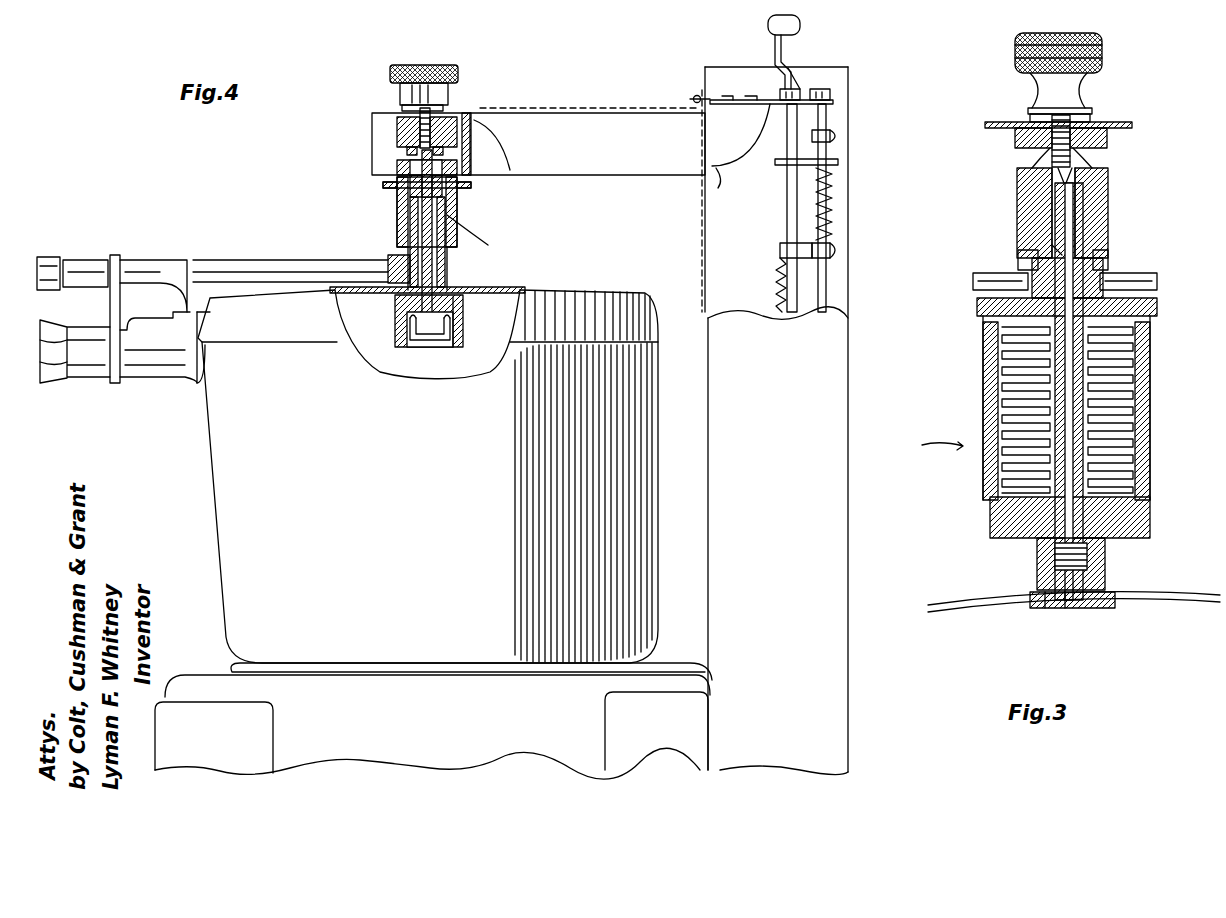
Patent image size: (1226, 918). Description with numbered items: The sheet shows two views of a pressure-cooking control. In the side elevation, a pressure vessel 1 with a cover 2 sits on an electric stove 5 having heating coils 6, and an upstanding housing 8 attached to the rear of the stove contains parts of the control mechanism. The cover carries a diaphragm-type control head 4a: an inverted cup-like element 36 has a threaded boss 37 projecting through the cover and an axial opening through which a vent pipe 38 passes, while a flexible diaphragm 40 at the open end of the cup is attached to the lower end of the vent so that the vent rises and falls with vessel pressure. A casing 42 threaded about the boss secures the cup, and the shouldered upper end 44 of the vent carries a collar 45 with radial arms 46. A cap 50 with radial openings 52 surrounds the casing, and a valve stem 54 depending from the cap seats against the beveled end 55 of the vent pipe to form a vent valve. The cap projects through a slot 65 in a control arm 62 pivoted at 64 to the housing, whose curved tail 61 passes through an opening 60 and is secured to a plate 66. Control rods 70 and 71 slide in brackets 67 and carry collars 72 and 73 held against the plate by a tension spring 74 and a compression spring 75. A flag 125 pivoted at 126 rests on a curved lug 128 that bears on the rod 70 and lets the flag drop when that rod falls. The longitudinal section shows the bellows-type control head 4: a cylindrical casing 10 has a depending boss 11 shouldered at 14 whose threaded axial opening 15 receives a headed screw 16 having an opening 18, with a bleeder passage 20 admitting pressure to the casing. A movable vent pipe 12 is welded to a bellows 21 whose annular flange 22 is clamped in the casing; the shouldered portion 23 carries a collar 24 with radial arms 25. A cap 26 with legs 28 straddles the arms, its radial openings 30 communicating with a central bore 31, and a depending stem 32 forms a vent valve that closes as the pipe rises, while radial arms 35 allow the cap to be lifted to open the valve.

In FIG. 4, the pressure vessel 1 is at (428, 476).
In FIG. 4, the cover 2 is at (515, 290).
In FIG. 3, the cover 2 is at (1182, 596).
In FIG. 3, the control head 4 is at (932, 441).
In FIG. 4, the control head 4a is at (458, 235).
In FIG. 4, the electric stove 5 is at (432, 727).
In FIG. 4, the heating coils 6 is at (640, 668).
In FIG. 4, the housing 8 is at (775, 421).
In FIG. 3, the cylindrical casing 10 is at (1150, 445).
In FIG. 3, the boss 11 is at (1105, 565).
In FIG. 3, the vent pipe 12 is at (1085, 420).
In FIG. 3, the shoulder 14 is at (1100, 608).
In FIG. 3, the axial opening 15 is at (1055, 560).
In FIG. 3, the headed screw 16 is at (1045, 608).
In FIG. 3, the opening 18 is at (1065, 608).
In FIG. 3, the bleeder passage 20 is at (1145, 505).
In FIG. 3, the bellows 21 is at (1135, 365).
In FIG. 3, the annular flange 22 is at (1157, 302).
In FIG. 3, the shoulder 23 is at (1103, 292).
In FIG. 3, the collar 24 is at (1090, 252).
In FIG. 3, the radial arms 25 is at (975, 282).
In FIG. 3, the cap 26 is at (1100, 198).
In FIG. 3, the legs 28 is at (1018, 262).
In FIG. 3, the radial openings 30 is at (1090, 148).
In FIG. 3, the central bore 31 is at (1080, 168).
In FIG. 3, the stem 32 is at (1035, 152).
In FIG. 3, the radial arms 35 is at (1000, 122).
In FIG. 4, the cup-like element 36 is at (396, 310).
In FIG. 4, the threaded boss 37 is at (447, 285).
In FIG. 4, the vent pipe 38 is at (464, 305).
In FIG. 4, the flexible diaphragm 40 is at (420, 345).
In FIG. 4, the casing 42 is at (452, 233).
In FIG. 4, the shoulder 44 is at (457, 165).
In FIG. 4, the collar 45 is at (442, 186).
In FIG. 4, the radial arms 46 is at (400, 192).
In FIG. 4, the cap 50 is at (500, 105).
In FIG. 4, the radial openings 52 is at (490, 135).
In FIG. 4, the valve stem 54 is at (420, 145).
In FIG. 4, the beveled end 55 is at (425, 150).
In FIG. 4, the opening 60 is at (705, 170).
In FIG. 4, the extension 61 is at (736, 182).
In FIG. 4, the control arm 62 is at (587, 141).
In FIG. 4, the pivot 64 is at (693, 99).
In FIG. 4, the elongate slot 65 is at (392, 110).
In FIG. 4, the plate 66 is at (830, 130).
In FIG. 4, the bracket 67 is at (838, 160).
In FIG. 4, the control rod 70 is at (776, 290).
In FIG. 4, the control rod 71 is at (826, 285).
In FIG. 4, the collar 72 is at (810, 96).
In FIG. 4, the collar 73 is at (832, 92).
In FIG. 4, the tension spring 74 is at (780, 252).
In FIG. 4, the compression spring 75 is at (832, 220).
In FIG. 4, the flag 125 is at (768, 20).
In FIG. 4, the pivot 126 is at (778, 60).
In FIG. 4, the supporting lug 128 is at (795, 74).